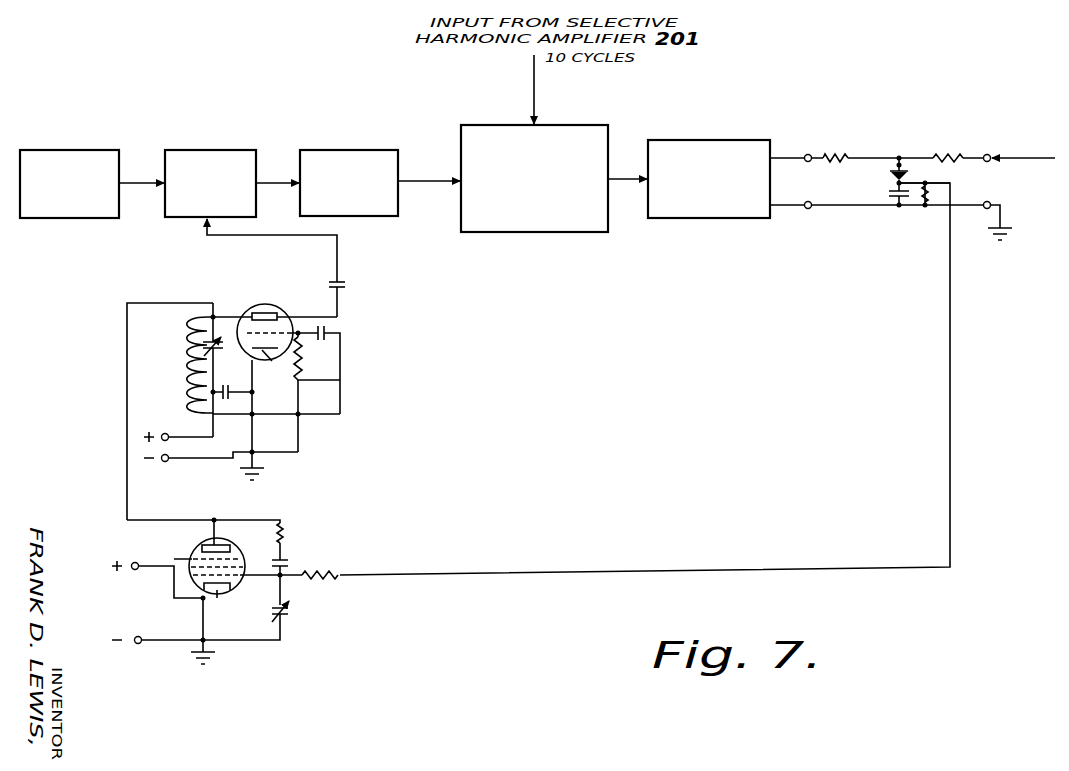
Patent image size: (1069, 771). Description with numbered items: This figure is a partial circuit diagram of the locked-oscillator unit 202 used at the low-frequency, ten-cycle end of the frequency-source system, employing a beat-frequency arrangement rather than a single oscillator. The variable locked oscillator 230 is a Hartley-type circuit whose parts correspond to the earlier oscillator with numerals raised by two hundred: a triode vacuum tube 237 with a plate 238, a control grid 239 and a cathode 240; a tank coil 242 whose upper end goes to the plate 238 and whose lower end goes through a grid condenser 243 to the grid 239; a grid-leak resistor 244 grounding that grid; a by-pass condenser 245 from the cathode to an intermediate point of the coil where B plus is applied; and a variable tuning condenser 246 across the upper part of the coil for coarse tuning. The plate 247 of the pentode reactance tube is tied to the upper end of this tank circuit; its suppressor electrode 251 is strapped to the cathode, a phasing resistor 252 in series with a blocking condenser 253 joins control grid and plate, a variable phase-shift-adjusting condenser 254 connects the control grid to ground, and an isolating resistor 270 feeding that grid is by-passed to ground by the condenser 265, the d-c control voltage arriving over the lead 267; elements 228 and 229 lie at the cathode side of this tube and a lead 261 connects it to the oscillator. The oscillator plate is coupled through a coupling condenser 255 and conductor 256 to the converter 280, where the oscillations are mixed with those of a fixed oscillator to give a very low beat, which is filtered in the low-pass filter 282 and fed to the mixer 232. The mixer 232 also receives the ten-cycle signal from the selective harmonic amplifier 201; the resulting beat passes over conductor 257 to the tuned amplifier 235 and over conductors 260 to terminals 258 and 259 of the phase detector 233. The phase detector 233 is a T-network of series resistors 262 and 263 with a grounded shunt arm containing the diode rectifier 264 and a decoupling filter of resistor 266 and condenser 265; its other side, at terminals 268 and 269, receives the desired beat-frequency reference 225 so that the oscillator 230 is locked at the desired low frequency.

The selective harmonic amplifier 201 is at (76, 218).
The locked-oscillator unit 202 is at (166, 110).
The reference input to phase detector 225 is at (1028, 160).
The negative supply terminal 228 is at (232, 612).
The cathode of reactance tube 229 is at (218, 588).
The variable locked oscillator 230 is at (307, 391).
The mixer 232 is at (570, 232).
The phase detector 233 is at (885, 169).
The tuned amplifier 235 is at (728, 218).
The triode vacuum tube 237 is at (233, 539).
The plate 238 is at (251, 308).
The control grid 239 is at (278, 332).
The cathode 240 is at (271, 364).
The tank coil 242 is at (201, 351).
The grid condenser 243 is at (317, 358).
The grid-leak resistor 244 is at (340, 380).
The by-pass condenser 245 is at (211, 393).
The variable tuning condenser 246 is at (189, 322).
The plate of reactance tube 247 is at (234, 541).
The suppressor electrode 251 is at (232, 552).
The phasing resistor 252 is at (200, 568).
The blocking condenser 253 is at (286, 561).
The variable phase-shift-adjusting condenser 254 is at (283, 618).
The coupling condenser 255 is at (342, 283).
The conductor 256 is at (277, 235).
The conductor 257 is at (628, 181).
The input terminal 258 is at (812, 146).
The input terminal 259 is at (820, 208).
The conductors 260 is at (781, 207).
The connecting lead 261 is at (127, 470).
The series resistor 262 is at (824, 169).
The series resistor 263 is at (963, 159).
The diode rectifier 264 is at (888, 173).
The by-pass condenser 265 is at (893, 200).
The resistor 266 is at (932, 206).
The d-c control voltage lead 267 is at (610, 557).
The input terminal 268 is at (990, 156).
The input terminal 269 is at (987, 210).
The isolating resistor 270 is at (343, 572).
The converter 280 is at (237, 143).
The low-pass filter 282 is at (371, 143).